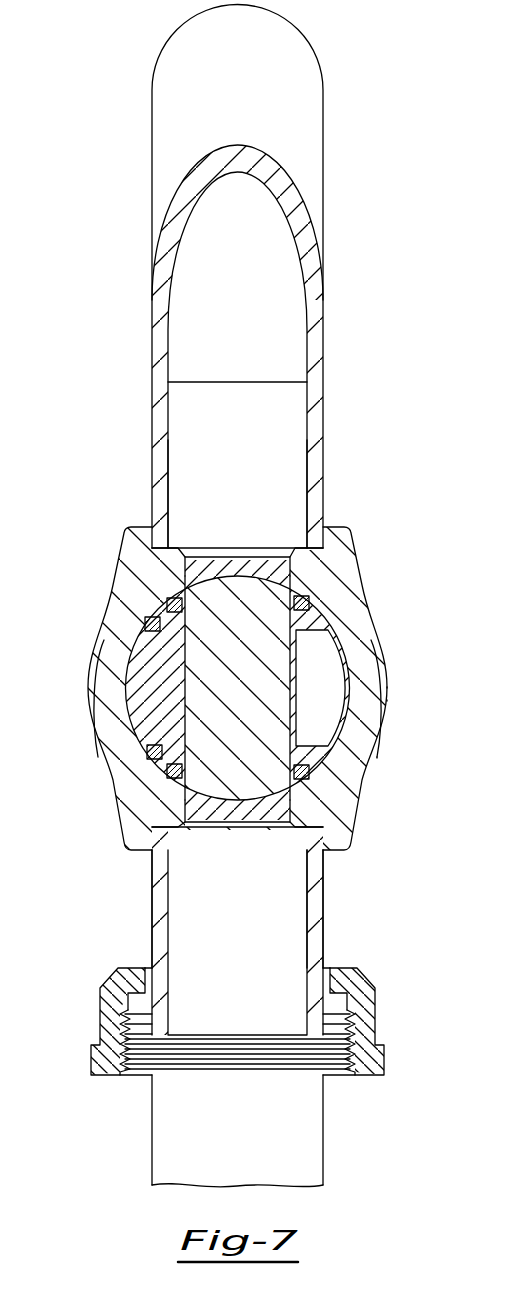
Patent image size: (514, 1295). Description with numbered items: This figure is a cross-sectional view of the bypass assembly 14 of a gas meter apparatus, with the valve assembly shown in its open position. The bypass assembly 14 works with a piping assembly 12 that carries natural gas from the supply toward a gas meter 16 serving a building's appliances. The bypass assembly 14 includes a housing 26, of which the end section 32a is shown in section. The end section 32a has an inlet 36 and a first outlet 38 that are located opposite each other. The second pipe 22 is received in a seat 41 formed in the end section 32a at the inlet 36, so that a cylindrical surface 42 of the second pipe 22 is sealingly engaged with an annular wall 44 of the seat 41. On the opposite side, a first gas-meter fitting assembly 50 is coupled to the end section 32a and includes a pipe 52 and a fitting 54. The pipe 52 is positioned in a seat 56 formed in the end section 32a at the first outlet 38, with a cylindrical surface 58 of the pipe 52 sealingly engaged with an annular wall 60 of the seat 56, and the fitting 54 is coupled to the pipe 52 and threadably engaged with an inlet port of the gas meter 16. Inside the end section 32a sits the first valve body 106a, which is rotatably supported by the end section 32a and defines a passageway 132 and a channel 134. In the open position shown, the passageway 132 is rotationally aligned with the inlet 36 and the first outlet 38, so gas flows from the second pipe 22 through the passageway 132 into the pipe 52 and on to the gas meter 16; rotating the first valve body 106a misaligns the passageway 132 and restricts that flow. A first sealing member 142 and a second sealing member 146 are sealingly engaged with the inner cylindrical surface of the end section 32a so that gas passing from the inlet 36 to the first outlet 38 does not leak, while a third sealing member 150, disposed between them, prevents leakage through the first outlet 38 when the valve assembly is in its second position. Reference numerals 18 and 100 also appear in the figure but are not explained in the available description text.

The piping assembly 12 is at (318, 42).
The bypass assembly 14 is at (390, 620).
The gas meter 16 is at (450, 619).
The outlet 18 is at (445, 779).
The second pipe 22 is at (323, 125).
The housing 26 is at (358, 558).
The end section 32a is at (118, 637).
The inlet 36 is at (172, 574).
The first outlet 38 is at (192, 830).
The seat 41 is at (312, 548).
The cylindrical surface 42 is at (323, 413).
The annular wall 44 is at (162, 536).
The first gas-meter fitting assembly 50 is at (141, 883).
The pipe 52 is at (325, 943).
The fitting 54 is at (376, 1016).
The seat 56 is at (315, 835).
The cylindrical surface 58 is at (325, 896).
The annular wall 60 is at (165, 850).
The flow path 100 is at (450, 706).
The first valve body 106a is at (157, 695).
The passageway 132 is at (190, 715).
The channel 134 is at (298, 688).
The first sealing member 142 is at (296, 600).
The second sealing member 146 is at (297, 768).
The third sealing member 150 is at (150, 618).